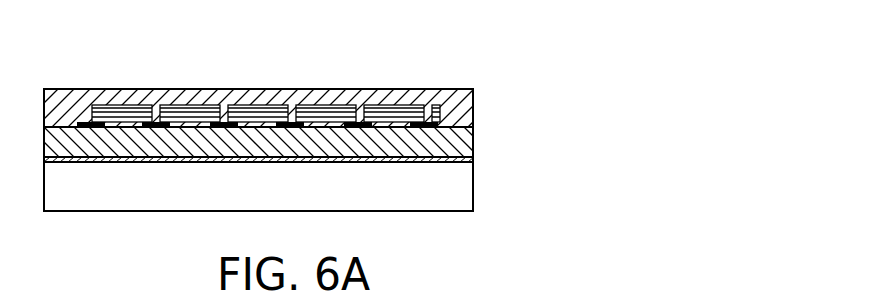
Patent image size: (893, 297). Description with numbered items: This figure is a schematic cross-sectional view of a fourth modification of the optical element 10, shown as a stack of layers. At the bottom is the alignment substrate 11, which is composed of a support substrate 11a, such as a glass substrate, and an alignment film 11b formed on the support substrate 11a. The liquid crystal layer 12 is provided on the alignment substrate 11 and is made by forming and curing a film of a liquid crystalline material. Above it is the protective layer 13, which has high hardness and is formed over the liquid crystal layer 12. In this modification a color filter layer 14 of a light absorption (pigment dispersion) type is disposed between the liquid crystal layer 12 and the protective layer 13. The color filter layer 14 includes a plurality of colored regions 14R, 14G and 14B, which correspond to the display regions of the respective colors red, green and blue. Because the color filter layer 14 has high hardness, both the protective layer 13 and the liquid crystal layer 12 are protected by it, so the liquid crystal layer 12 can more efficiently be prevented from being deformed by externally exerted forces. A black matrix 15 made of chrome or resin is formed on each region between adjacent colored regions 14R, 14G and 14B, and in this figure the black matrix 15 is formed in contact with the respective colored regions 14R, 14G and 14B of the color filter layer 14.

The optical element 10 is at (518, 52).
The alignment substrate 11 is at (321, 177).
The support substrate 11a is at (465, 192).
The alignment film 11b is at (462, 158).
The liquid crystal layer 12 is at (473, 143).
The protective layer 13 is at (473, 101).
The color filter layer 14 is at (266, 63).
The colored region 14R is at (136, 104).
The colored region 14G is at (203, 104).
The colored region 14B is at (261, 86).
The black matrix 15 is at (293, 113).